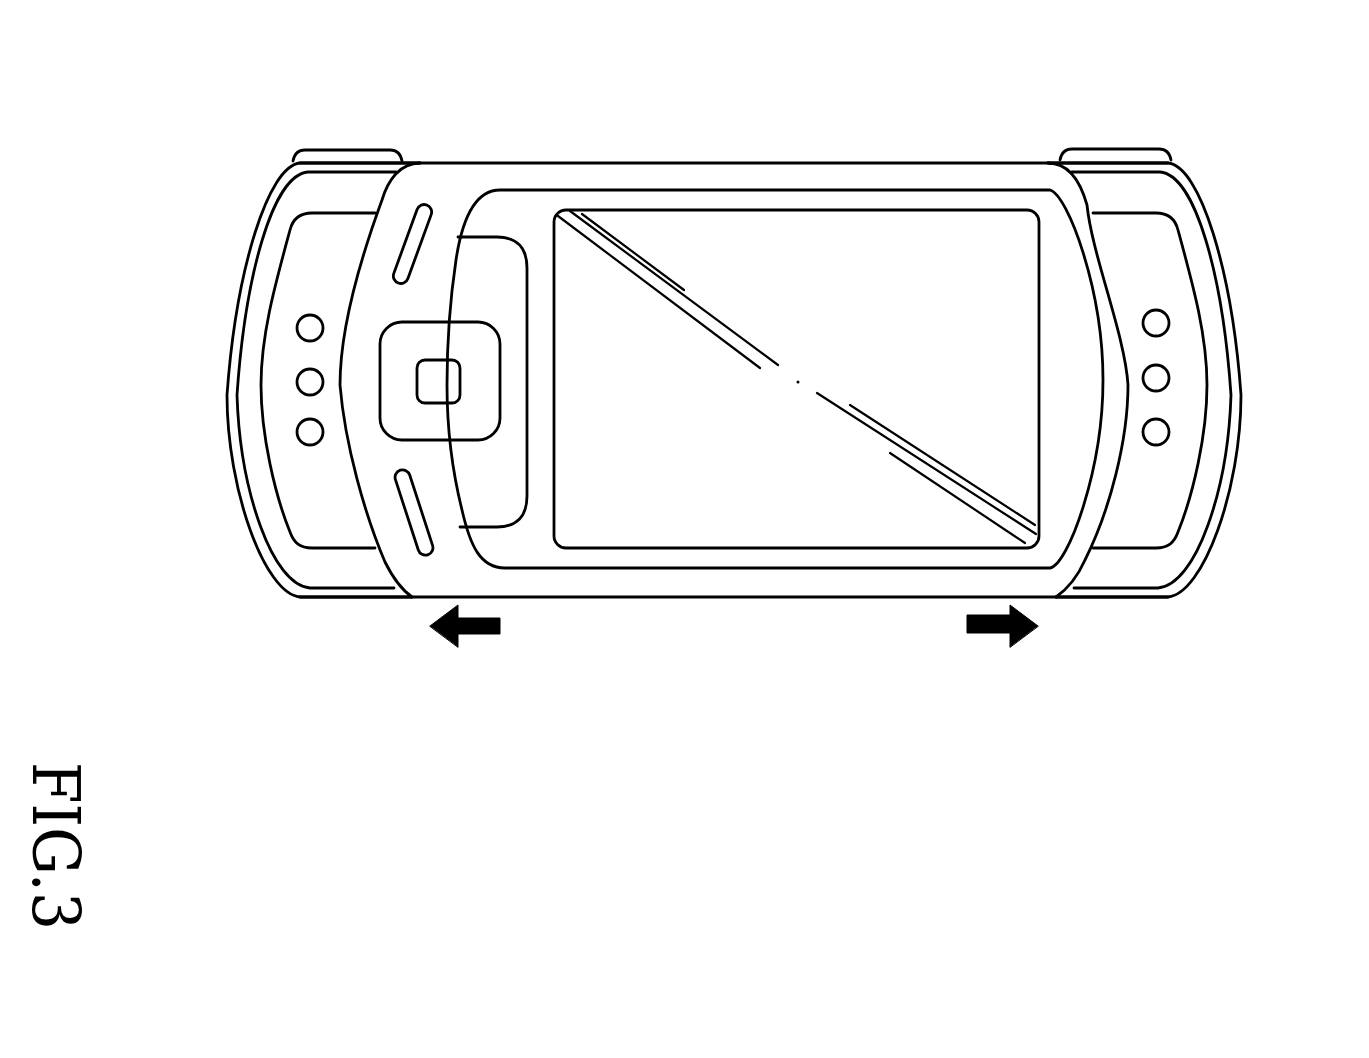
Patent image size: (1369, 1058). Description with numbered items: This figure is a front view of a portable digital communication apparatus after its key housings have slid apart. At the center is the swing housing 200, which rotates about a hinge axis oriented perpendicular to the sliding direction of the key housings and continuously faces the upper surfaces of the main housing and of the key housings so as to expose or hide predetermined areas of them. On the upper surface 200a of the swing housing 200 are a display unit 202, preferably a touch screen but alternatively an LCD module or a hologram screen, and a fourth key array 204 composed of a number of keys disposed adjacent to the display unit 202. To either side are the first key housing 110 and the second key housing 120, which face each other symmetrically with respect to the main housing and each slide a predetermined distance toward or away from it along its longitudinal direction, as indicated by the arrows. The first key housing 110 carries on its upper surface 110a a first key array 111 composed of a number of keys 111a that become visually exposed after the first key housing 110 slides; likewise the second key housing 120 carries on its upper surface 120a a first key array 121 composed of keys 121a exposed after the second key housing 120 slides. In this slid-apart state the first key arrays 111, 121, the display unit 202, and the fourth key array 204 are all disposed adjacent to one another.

The first key housing 110 is at (1243, 442).
The upper surface of first key housing 110a is at (1131, 523).
The first key array 111 is at (1116, 148).
The keys 111a is at (1158, 325).
The second key housing 120 is at (222, 388).
The upper surface of second key housing 120a is at (307, 507).
The first key array 121 is at (348, 148).
The keys 121a is at (298, 328).
The swing housing 200 is at (788, 604).
The upper surface of swing housing 200a is at (541, 200).
The display unit 202 is at (633, 528).
The fourth key array 204 is at (437, 232).